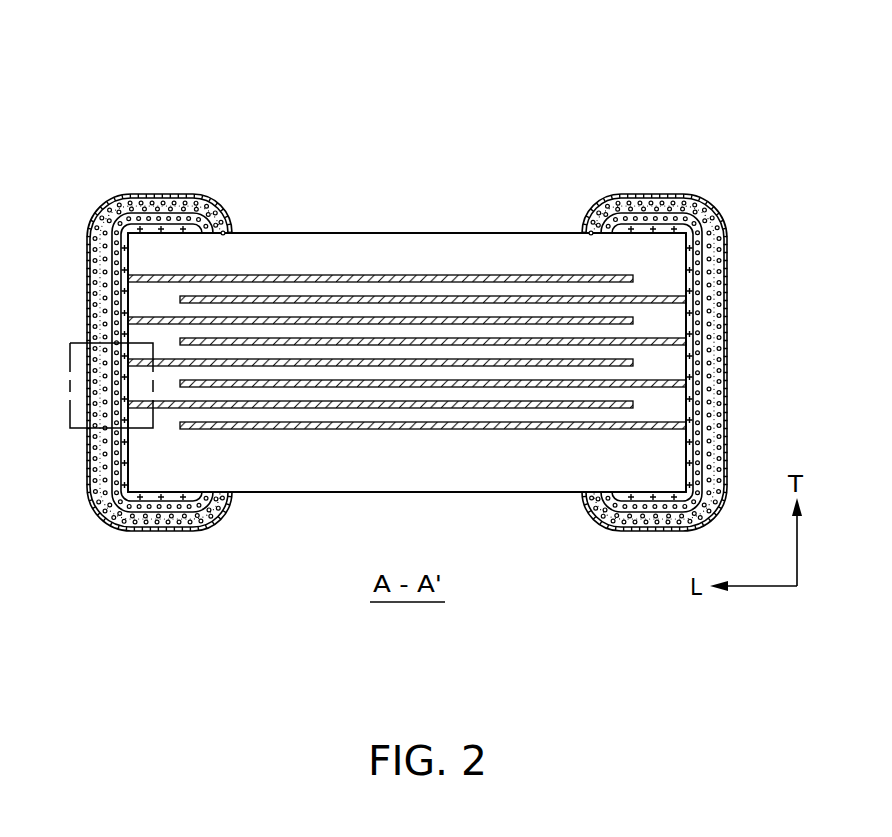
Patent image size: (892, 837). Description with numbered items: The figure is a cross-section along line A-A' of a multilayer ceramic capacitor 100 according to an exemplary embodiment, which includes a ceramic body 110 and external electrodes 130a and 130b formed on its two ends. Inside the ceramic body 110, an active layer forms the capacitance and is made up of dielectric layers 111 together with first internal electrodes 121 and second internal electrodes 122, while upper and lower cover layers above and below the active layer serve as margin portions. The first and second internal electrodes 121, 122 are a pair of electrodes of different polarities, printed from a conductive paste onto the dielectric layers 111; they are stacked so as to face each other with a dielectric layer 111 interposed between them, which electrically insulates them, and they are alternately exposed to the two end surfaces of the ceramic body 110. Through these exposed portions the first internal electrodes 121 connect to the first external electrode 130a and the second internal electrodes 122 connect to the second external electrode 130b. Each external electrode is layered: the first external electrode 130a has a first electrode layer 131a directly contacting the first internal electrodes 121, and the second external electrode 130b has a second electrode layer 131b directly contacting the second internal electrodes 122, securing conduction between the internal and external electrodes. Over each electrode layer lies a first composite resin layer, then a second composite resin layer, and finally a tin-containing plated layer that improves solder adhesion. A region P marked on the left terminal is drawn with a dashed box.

The multilayer ceramic capacitor 100 is at (430, 40).
The ceramic body 110 is at (463, 237).
The dielectric layer 111 is at (293, 290).
The first internal electrode 121 is at (358, 278).
The second internal electrode 122 is at (420, 297).
The first external electrode 130a is at (262, 123).
The second external electrode 130b is at (772, 123).
The first electrode layer 131a is at (192, 226).
The second electrode layer 131b is at (622, 226).
The enlarged region P is at (70, 385).